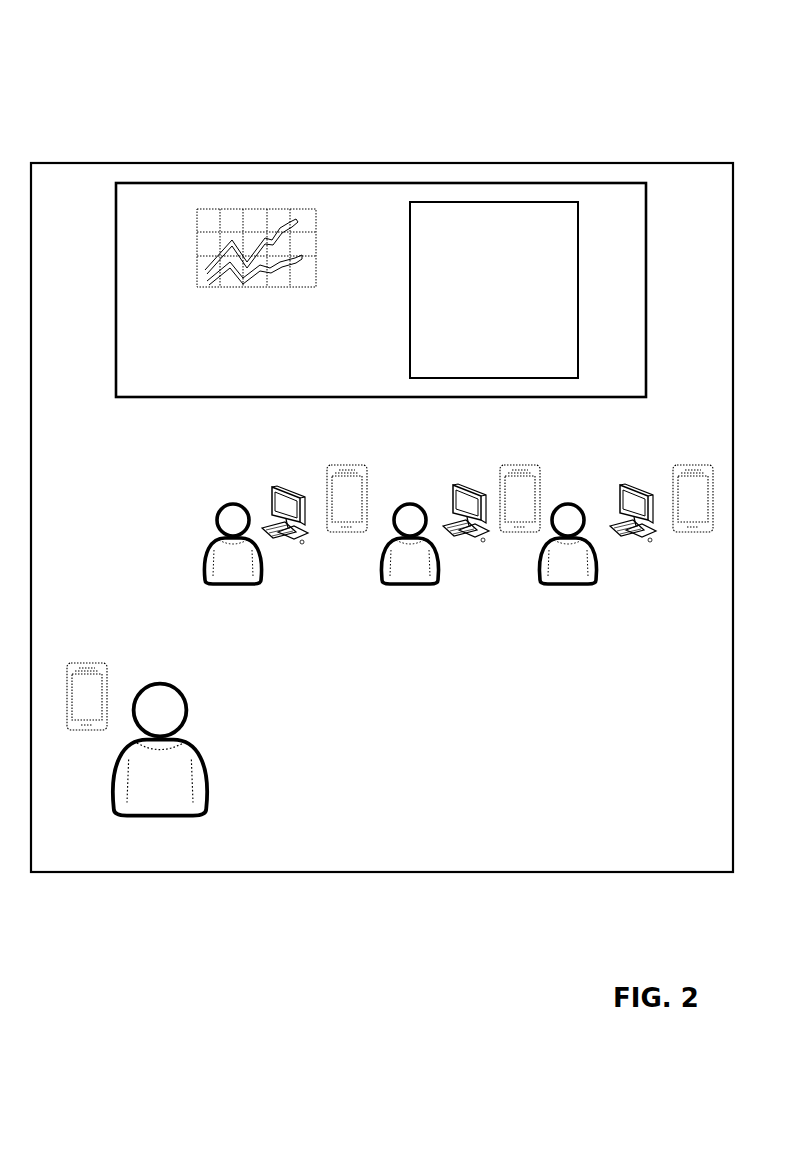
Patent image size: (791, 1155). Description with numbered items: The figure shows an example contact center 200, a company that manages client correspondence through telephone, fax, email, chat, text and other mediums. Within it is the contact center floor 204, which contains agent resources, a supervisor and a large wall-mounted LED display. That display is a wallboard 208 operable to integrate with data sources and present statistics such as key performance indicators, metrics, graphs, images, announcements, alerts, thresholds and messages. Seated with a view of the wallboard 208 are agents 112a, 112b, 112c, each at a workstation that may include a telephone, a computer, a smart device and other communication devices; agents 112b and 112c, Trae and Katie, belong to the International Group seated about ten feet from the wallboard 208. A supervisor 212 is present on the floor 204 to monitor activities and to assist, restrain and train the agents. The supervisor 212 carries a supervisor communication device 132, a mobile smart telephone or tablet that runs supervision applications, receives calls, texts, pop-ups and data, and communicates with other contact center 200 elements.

The contact center 200 is at (96, 96).
The contact center floor 204 is at (637, 163).
The wallboard 208 is at (382, 183).
The agent 112a is at (265, 486).
The agent 112b is at (470, 484).
The agent 112c is at (620, 485).
The supervisor communication device 132 is at (67, 692).
The supervisor 212 is at (127, 797).